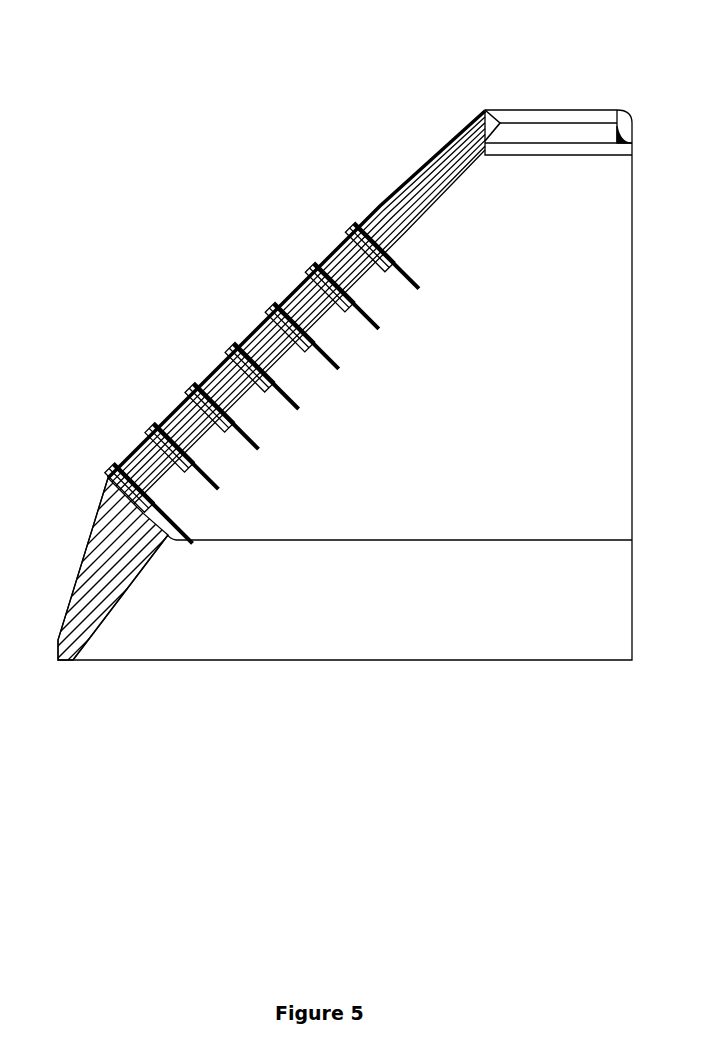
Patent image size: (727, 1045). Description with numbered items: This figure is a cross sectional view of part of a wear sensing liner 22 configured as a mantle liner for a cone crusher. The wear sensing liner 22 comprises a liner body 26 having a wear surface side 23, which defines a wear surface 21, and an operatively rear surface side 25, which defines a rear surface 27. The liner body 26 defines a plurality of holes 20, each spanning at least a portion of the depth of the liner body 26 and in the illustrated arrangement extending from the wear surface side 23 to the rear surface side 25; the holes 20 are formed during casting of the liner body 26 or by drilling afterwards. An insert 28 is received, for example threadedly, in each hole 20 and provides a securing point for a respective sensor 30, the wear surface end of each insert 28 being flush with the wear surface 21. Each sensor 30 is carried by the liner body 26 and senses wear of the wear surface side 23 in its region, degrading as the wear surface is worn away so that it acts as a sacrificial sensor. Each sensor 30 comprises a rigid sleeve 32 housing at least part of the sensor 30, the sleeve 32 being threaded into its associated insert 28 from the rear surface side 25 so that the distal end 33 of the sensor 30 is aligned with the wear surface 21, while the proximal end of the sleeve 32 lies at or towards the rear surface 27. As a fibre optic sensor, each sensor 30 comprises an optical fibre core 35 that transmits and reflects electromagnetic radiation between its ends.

The holes 20 is at (163, 535).
The wear surface 21 is at (430, 167).
The wear sensing liner 22 is at (491, 103).
The wear surface side 23 is at (383, 194).
The rear surface side 25 is at (313, 377).
The liner body 26 is at (447, 150).
The rear surface 27 is at (378, 334).
The insert 28 is at (140, 512).
The sensor 30 is at (351, 221).
The rigid sleeve 32 is at (108, 487).
The distal end 33 is at (110, 478).
The optical fibre core 35 is at (183, 540).